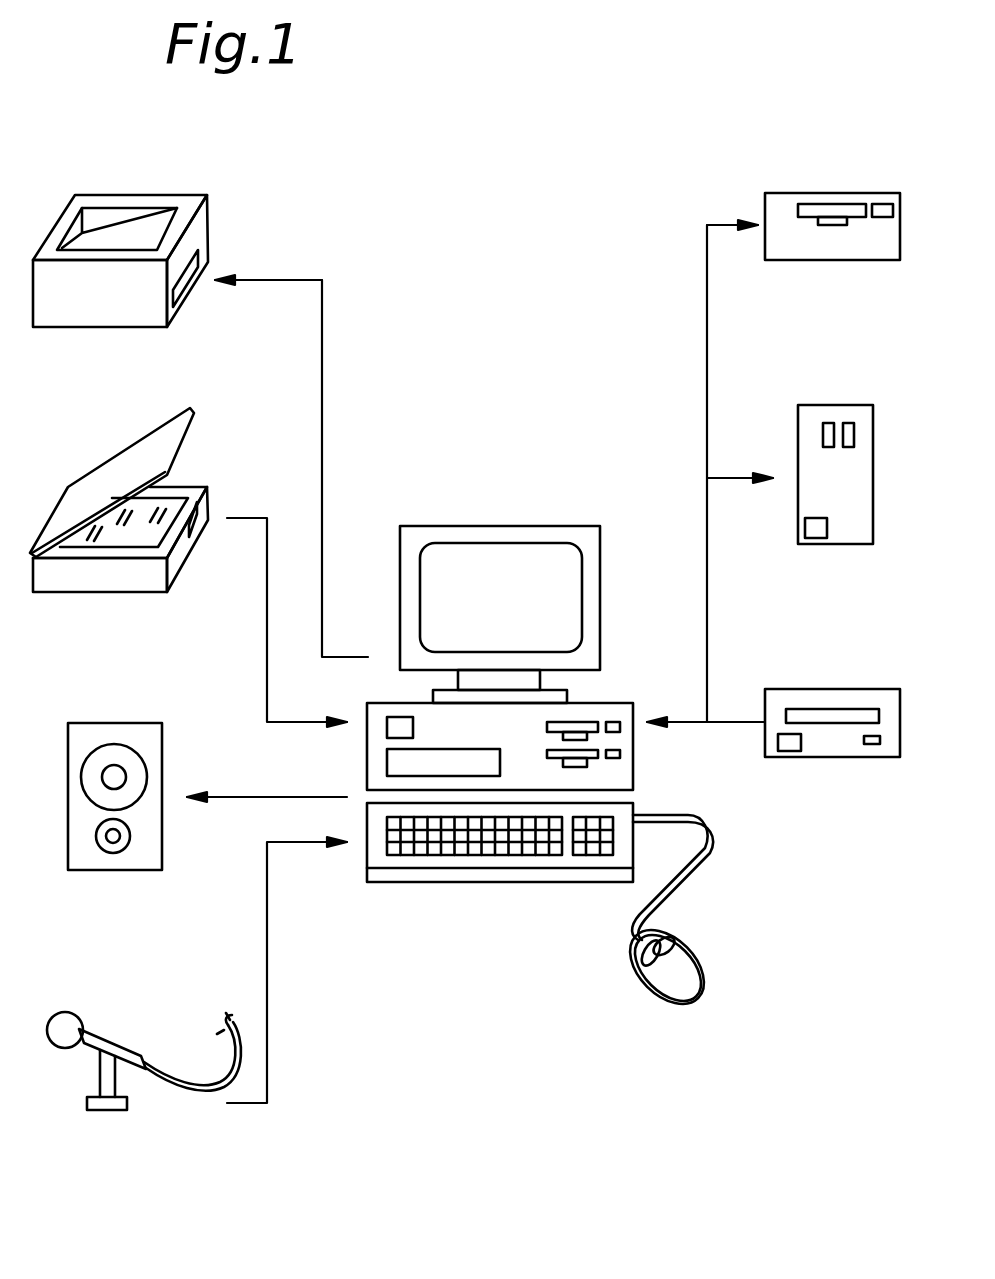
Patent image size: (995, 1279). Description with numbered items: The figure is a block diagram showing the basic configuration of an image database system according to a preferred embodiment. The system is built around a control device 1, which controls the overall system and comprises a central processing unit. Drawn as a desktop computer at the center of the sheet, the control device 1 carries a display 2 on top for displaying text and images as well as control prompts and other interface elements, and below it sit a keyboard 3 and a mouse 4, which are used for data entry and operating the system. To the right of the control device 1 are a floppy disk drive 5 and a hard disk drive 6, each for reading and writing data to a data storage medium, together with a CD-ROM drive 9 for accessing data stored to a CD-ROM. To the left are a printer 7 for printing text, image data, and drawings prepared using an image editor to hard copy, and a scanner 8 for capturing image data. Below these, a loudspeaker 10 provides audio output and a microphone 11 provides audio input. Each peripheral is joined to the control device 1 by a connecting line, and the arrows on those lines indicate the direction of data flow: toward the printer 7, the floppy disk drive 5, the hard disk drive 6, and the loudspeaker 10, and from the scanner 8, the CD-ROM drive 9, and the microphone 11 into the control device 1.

The control device 1 is at (633, 768).
The display 2 is at (562, 523).
The keyboard 3 is at (447, 882).
The mouse 4 is at (665, 982).
The floppy disk drive 5 is at (838, 252).
The hard disk drive 6 is at (845, 537).
The printer 7 is at (100, 322).
The scanner 8 is at (100, 585).
The CD-ROM drive 9 is at (838, 749).
The loudspeaker 10 is at (114, 862).
The microphone 11 is at (102, 1110).